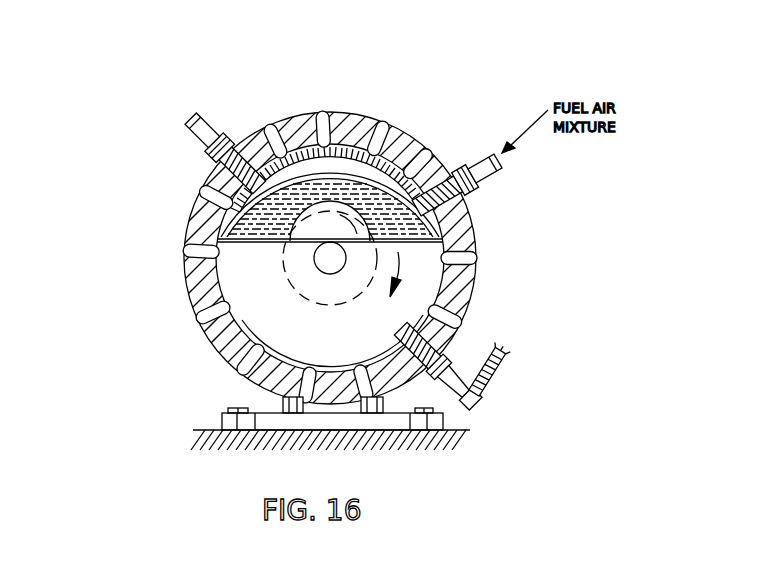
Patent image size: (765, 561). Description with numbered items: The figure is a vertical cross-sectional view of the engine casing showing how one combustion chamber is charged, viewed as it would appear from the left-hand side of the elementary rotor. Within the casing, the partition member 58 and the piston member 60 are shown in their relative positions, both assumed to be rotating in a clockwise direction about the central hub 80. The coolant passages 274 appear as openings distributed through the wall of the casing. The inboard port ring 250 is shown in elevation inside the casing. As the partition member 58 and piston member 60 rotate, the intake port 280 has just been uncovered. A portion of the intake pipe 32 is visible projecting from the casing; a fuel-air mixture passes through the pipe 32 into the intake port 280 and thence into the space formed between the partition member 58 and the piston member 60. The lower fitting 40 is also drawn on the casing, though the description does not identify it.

The partition member 58 is at (305, 158).
The hub 80 is at (330, 232).
The inboard port ring 250 is at (388, 168).
The intake port 280 is at (430, 207).
The intake pipe 32 is at (470, 163).
The piston member 60 is at (478, 251).
The exhaust hose 40 is at (497, 380).
The coolant passages 274 is at (185, 242).